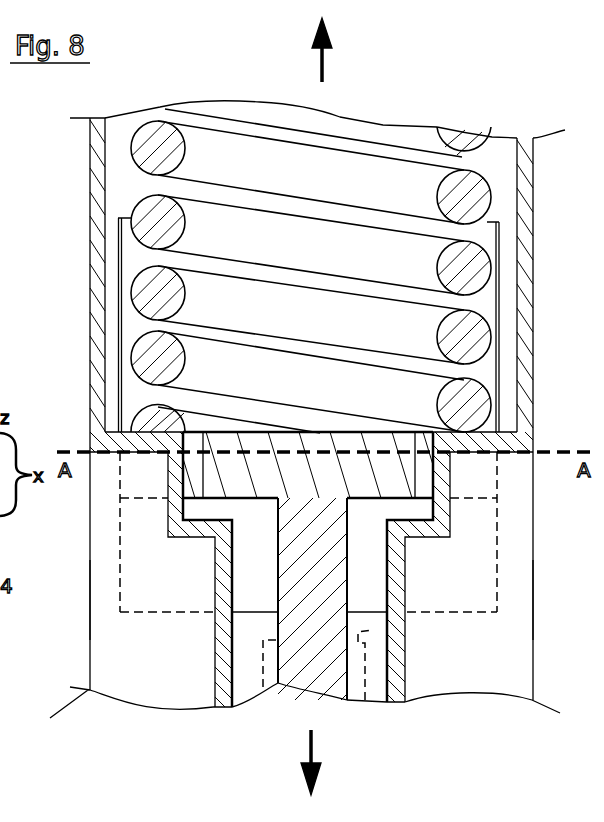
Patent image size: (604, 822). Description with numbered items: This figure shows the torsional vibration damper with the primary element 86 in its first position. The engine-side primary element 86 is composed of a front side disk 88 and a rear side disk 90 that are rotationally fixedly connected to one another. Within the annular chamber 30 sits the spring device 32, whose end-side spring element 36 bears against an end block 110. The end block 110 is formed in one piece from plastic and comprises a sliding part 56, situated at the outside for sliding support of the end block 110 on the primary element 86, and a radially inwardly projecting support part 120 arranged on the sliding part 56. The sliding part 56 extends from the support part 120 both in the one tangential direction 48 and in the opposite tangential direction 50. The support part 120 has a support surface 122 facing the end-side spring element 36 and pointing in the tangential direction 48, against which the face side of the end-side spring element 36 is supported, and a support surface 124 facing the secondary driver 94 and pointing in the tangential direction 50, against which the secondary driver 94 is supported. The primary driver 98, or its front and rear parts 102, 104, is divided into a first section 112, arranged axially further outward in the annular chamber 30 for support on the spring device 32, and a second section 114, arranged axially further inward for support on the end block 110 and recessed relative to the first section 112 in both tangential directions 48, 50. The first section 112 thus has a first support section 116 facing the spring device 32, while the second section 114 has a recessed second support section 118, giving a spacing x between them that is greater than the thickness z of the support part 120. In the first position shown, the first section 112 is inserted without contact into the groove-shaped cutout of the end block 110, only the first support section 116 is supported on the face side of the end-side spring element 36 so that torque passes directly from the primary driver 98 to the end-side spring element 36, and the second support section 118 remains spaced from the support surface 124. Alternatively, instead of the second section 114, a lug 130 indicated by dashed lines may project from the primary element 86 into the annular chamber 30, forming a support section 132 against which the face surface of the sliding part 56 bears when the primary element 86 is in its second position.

The annular chamber 30 is at (270, 583).
The spring device 32 is at (446, 113).
The end-side spring element 36 is at (375, 132).
The tangential direction 48 is at (311, 750).
The opposite tangential direction 50 is at (322, 61).
The sliding part 56 is at (107, 233).
The primary element 86 is at (544, 165).
The front side disk 88 is at (533, 278).
The rear side disk 90 is at (90, 227).
The secondary driver 94 is at (347, 688).
The primary driver 98 is at (196, 657).
The front part 102 is at (297, 614).
The rear part 104 is at (62, 616).
The end block 110 is at (106, 261).
The first section 112 is at (175, 497).
The second section 114 is at (220, 590).
The first support section 116 is at (135, 432).
The second support section 118 is at (169, 502).
The support part 120 is at (250, 452).
The support surface 122 is at (363, 420).
The support surface 124 is at (405, 520).
The lug 130 is at (258, 668).
The support section 132 is at (405, 680).